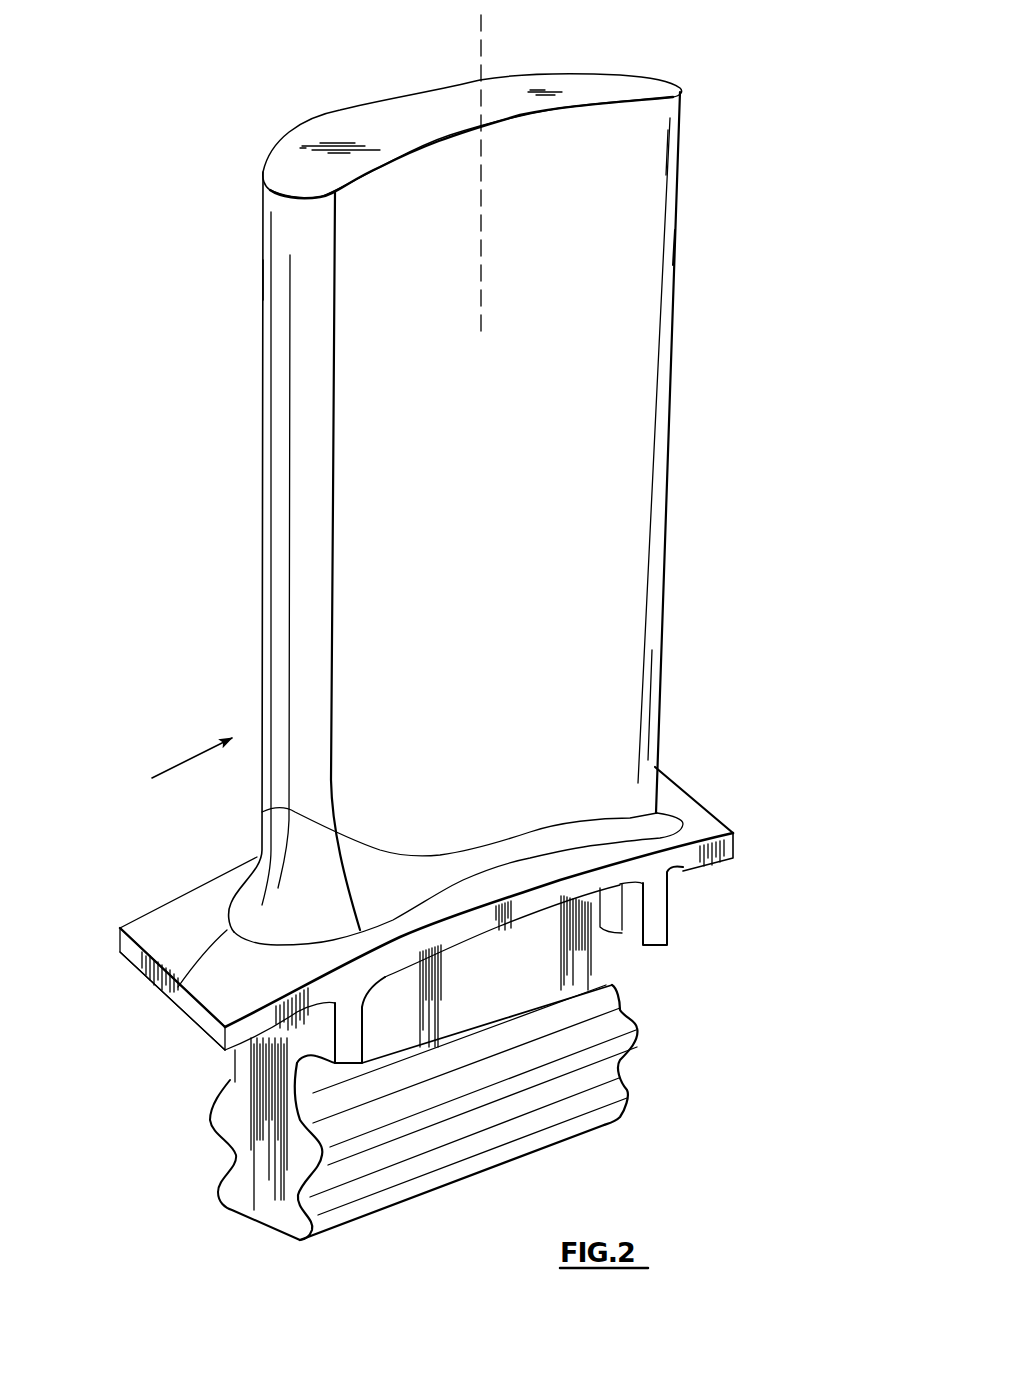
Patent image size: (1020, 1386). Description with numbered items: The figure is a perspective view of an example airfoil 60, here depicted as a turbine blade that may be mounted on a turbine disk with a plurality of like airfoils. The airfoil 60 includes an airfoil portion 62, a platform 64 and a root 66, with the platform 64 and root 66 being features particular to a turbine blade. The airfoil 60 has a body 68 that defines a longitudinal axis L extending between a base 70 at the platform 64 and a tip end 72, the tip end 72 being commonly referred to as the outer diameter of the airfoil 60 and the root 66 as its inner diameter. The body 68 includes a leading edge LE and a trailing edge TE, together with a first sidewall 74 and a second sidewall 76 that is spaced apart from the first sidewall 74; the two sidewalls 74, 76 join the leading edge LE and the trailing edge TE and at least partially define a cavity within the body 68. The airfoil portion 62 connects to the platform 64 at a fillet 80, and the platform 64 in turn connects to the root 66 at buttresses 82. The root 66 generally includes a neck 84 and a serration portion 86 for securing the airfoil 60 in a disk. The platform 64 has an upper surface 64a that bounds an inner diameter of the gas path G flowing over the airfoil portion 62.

The airfoil 60 is at (140, 679).
The airfoil portion 62 is at (648, 425).
The platform 64 is at (704, 823).
The upper surface 64a is at (673, 802).
The root 66 is at (590, 997).
The body 68 is at (625, 688).
The base 70 is at (172, 997).
The tip end 72 is at (352, 127).
The first sidewall 74 is at (645, 127).
The second sidewall 76 is at (583, 72).
The fillet 80 is at (278, 853).
The buttresses 82 is at (335, 1030).
The neck 84 is at (548, 938).
The serration portion 86 is at (327, 1177).
The leading edge LE is at (260, 276).
The trailing edge TE is at (675, 246).
The longitudinal axis L is at (482, 248).
The gas path G is at (185, 757).